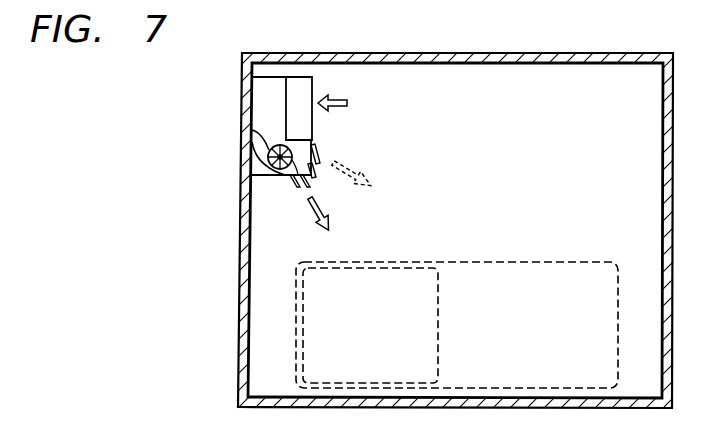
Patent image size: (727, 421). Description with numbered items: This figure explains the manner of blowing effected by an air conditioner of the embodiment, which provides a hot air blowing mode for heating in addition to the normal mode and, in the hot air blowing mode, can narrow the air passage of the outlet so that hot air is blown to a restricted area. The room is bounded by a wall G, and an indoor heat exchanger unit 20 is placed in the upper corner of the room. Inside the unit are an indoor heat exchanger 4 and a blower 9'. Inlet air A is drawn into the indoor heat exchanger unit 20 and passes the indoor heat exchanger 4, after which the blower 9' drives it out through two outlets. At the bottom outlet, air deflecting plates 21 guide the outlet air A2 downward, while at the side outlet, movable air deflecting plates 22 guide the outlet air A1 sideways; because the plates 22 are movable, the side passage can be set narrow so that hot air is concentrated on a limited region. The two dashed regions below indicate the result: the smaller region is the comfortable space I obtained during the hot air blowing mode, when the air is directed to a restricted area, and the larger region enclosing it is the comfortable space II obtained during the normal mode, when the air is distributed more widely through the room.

The wall of the room G is at (513, 54).
The indoor heat exchanger 4 is at (308, 90).
The blower 9' is at (252, 141).
The indoor heat exchanger unit 20 is at (268, 177).
The air deflecting plates at the bottom outlet 21 is at (313, 183).
The movable air deflecting plates at the side outlet 22 is at (318, 152).
The inlet air A is at (348, 103).
The outlet air from the side outlet A1 is at (357, 170).
The outlet air from the bottom outlet A2 is at (330, 228).
The comfortable space during the hot air blowing mode I is at (476, 300).
The comfortable space during the normal mode II is at (575, 222).